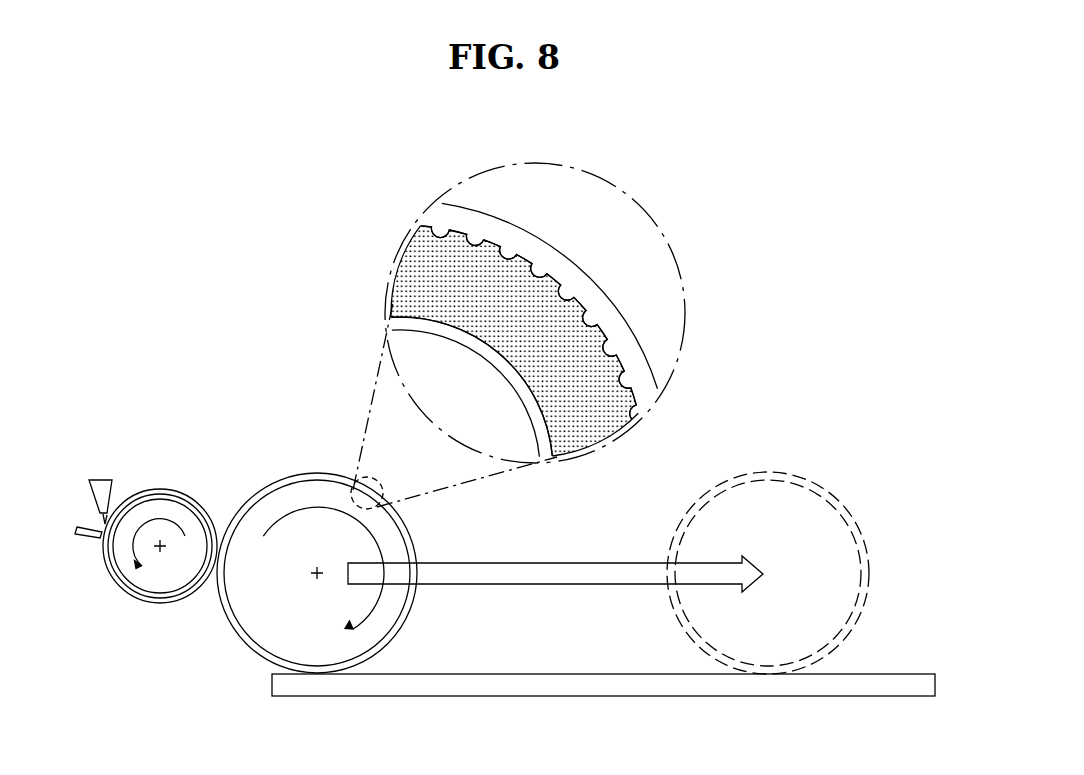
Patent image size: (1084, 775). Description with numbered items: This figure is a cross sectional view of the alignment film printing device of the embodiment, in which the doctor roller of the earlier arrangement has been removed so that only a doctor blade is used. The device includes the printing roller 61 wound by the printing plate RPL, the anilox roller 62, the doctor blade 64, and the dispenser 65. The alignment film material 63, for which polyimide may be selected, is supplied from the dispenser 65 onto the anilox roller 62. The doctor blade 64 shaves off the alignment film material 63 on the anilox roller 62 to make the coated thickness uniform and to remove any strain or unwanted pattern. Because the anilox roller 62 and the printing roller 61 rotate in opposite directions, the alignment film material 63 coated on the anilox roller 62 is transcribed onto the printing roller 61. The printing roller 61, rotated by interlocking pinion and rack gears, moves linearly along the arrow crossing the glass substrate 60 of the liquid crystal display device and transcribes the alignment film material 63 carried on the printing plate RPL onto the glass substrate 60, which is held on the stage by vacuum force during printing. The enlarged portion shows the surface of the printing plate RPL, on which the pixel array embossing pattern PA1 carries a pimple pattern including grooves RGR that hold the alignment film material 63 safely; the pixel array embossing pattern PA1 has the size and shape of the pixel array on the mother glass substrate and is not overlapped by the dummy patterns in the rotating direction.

The glass substrate 60 is at (416, 687).
The printing roller 61 is at (252, 613).
The anilox roller 62 is at (148, 582).
The alignment film material 63 is at (167, 491).
The doctor blade 64 is at (88, 537).
The dispenser 65 is at (102, 478).
The pixel array embossing pattern PA1 is at (420, 255).
The grooves RGR is at (627, 388).
The printing plate RPL is at (293, 473).